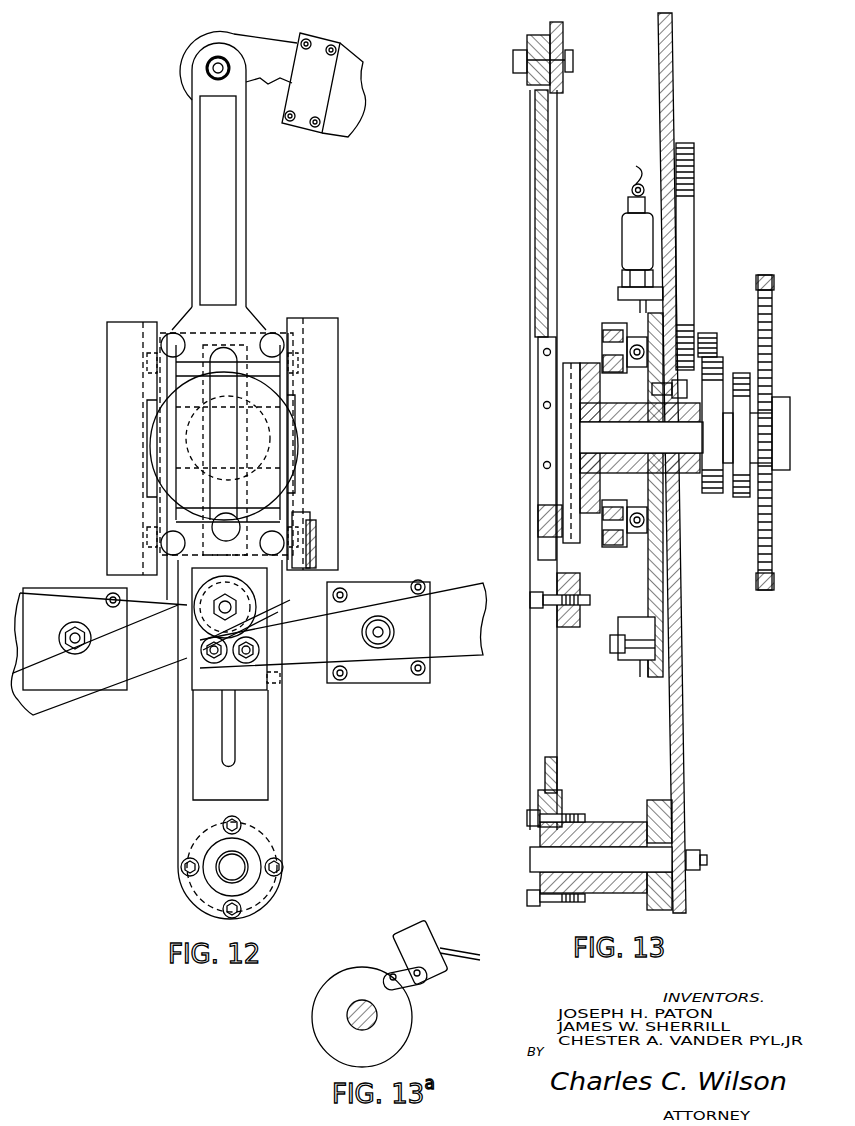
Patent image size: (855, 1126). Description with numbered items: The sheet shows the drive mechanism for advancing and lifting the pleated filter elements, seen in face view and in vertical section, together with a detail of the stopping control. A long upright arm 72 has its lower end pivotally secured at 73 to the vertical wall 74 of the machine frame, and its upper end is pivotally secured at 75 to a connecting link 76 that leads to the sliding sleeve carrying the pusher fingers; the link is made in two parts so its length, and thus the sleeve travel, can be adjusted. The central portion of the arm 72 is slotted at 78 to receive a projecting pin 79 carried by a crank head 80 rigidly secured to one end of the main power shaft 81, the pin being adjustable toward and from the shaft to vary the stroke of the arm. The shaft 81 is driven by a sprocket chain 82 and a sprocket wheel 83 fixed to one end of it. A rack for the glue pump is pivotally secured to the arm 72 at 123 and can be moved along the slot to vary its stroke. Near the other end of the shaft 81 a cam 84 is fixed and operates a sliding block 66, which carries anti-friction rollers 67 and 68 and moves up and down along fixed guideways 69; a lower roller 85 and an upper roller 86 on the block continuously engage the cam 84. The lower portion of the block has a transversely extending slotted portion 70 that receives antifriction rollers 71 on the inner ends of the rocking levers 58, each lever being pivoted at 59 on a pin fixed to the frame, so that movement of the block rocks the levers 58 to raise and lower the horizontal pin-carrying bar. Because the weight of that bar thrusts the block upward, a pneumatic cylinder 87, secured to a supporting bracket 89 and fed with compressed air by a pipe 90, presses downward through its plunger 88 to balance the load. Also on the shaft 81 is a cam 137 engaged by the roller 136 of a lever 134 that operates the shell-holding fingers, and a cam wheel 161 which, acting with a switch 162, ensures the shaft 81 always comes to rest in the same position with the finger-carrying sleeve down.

In FIG. 12, the rocking lever 58 is at (20, 597).
In FIG. 13, the rocking lever 58 is at (623, 623).
In FIG. 12, the pivot pin 59 is at (393, 625).
In FIG. 12, the sliding block 66 is at (283, 605).
In FIG. 13, the sliding block 66 is at (648, 582).
In FIG. 12, the anti-friction roller 67 is at (275, 333).
In FIG. 12, the anti-friction roller 68 is at (310, 523).
In FIG. 12, the fixed guideway 69 is at (117, 455).
In FIG. 12, the slotted portion 70 is at (210, 687).
In FIG. 12, the antifriction roller 71 is at (180, 690).
In FIG. 13, the antifriction roller 71 is at (640, 645).
In FIG. 12, the upright arm 72 is at (206, 191).
In FIG. 13, the upright arm 72 is at (542, 225).
In FIG. 12, the pivot 73 is at (238, 863).
In FIG. 13, the pivot 73 is at (537, 862).
In FIG. 13, the vertical wall 74 is at (677, 752).
In FIG. 12, the pivot 75 is at (212, 70).
In FIG. 12, the connecting link 76 is at (348, 83).
In FIG. 13, the connecting link 76 is at (563, 40).
In FIG. 12, the slot 78 is at (207, 433).
In FIG. 13, the slot 78 is at (545, 377).
In FIG. 12, the projecting pin 79 is at (213, 527).
In FIG. 13, the projecting pin 79 is at (547, 517).
In FIG. 13, the crank head 80 is at (570, 432).
In FIG. 13a, the main power shaft 81 is at (347, 1007).
In FIG. 13, the main power shaft 81 is at (687, 440).
In FIG. 13, the sprocket chain 82 is at (760, 588).
In FIG. 13, the sprocket wheel 83 is at (763, 558).
In FIG. 13, the cam 84 is at (607, 390).
In FIG. 13, the lower roller 85 is at (608, 530).
In FIG. 13, the upper roller 86 is at (608, 345).
In FIG. 13, the pneumatic cylinder 87 is at (635, 233).
In FIG. 13, the plunger 88 is at (680, 300).
In FIG. 13, the supporting bracket 89 is at (660, 287).
In FIG. 13, the air pipe 90 is at (630, 181).
In FIG. 12, the pivot 123 is at (213, 605).
In FIG. 13, the pivot 123 is at (570, 630).
In FIG. 13, the lever 134 is at (685, 203).
In FIG. 13, the roller 136 is at (710, 333).
In FIG. 13, the cam 137 is at (718, 470).
In FIG. 13a, the cam wheel 161 is at (335, 1042).
In FIG. 13, the cam wheel 161 is at (742, 373).
In FIG. 13a, the switch 162 is at (433, 962).